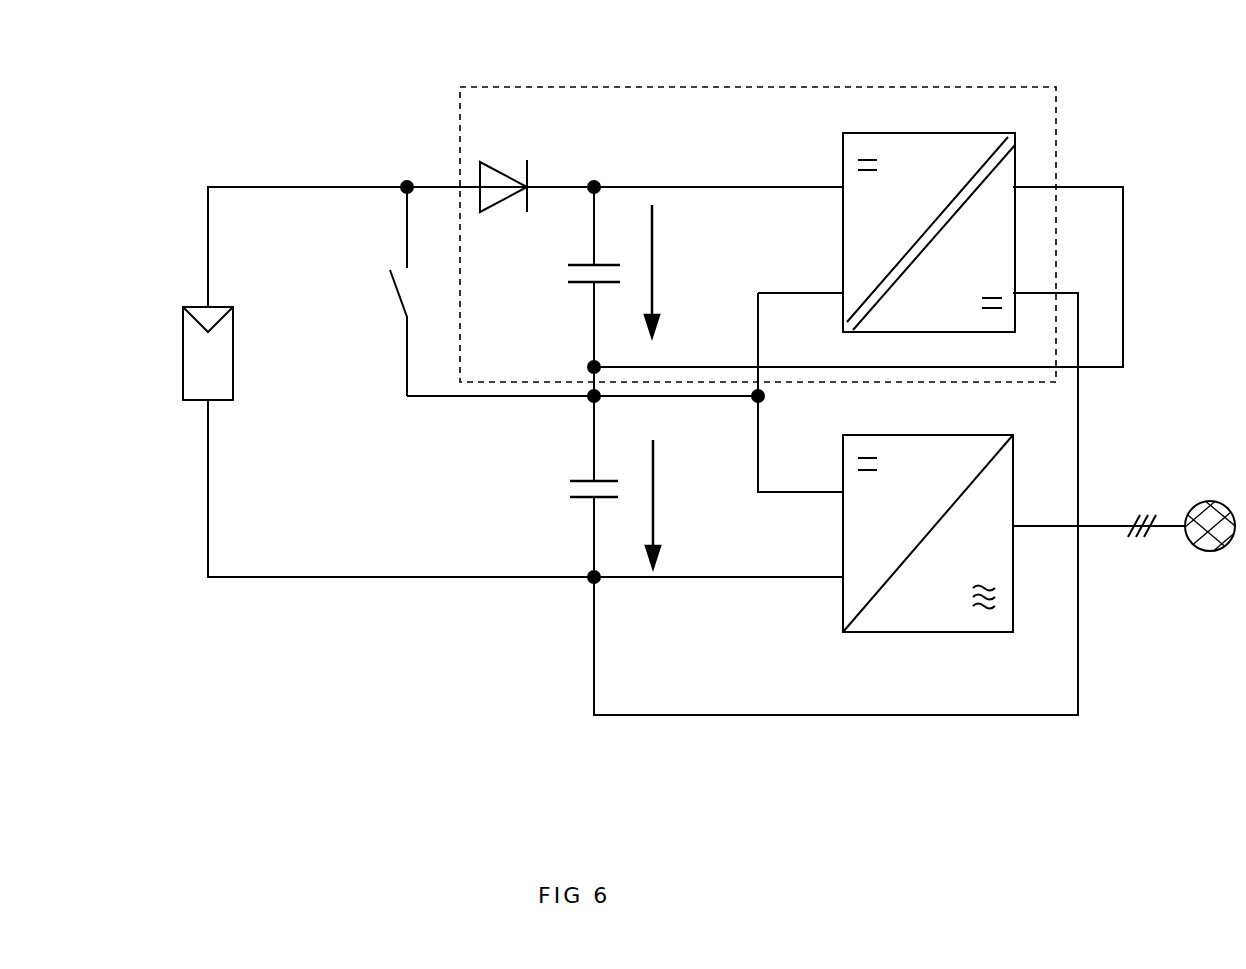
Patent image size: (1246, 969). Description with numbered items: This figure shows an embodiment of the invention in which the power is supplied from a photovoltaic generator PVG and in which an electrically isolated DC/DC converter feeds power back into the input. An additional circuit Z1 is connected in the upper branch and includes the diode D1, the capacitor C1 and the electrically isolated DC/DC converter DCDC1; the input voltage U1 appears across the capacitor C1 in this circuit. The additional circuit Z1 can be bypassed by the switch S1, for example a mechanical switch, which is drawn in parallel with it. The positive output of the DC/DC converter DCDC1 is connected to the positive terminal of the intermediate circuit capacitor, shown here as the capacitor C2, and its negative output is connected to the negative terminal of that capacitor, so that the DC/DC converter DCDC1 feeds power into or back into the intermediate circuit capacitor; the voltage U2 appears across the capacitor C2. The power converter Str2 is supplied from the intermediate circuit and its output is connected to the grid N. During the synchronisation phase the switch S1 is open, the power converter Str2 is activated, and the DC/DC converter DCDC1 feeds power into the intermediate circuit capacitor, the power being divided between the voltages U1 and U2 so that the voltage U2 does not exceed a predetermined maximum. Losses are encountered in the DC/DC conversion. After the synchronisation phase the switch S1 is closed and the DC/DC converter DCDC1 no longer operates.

The photovoltaic generator PVG is at (162, 353).
The switch S1 is at (378, 294).
The additional circuit Z1 is at (582, 86).
The diode D1 is at (506, 161).
The capacitor C1 is at (577, 294).
The input voltage U1 is at (672, 271).
The electrically isolated DC/DC converter DCDC1 is at (929, 213).
The capacitor C2 is at (576, 508).
The input voltage U2 is at (672, 504).
The power converter Str2 is at (928, 559).
The grid / network N is at (1129, 525).